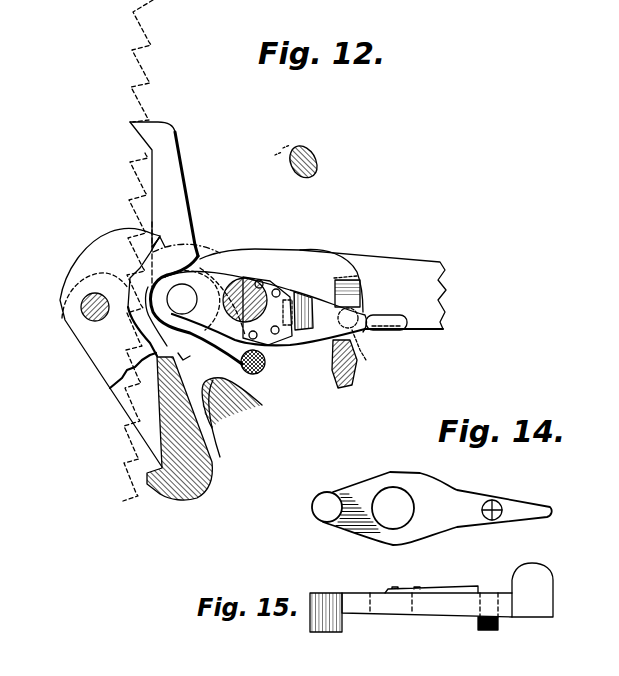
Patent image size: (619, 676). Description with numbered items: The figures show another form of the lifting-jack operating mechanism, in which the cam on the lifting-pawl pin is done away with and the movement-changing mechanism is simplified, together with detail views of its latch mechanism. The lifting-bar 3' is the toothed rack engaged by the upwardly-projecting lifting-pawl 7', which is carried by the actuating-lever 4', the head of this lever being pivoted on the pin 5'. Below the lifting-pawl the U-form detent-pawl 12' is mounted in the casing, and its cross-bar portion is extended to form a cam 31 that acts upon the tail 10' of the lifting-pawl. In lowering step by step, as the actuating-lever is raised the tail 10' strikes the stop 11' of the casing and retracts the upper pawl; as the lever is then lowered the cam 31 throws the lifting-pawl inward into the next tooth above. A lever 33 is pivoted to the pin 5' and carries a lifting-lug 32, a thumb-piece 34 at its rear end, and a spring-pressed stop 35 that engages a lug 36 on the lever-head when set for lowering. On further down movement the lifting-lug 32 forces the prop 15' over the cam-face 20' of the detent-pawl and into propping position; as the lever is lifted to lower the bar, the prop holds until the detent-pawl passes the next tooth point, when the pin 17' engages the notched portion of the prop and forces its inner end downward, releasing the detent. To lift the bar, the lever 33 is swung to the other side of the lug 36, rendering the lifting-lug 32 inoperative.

In FIG. 12, the lifting-bar 3' is at (151, 250).
In FIG. 12, the lifting-pawl 7' is at (247, 243).
In FIG. 12, the cam-face 20' is at (113, 347).
In FIG. 12, the detent-pawl 12' is at (154, 424).
In FIG. 12, the prop 15' is at (204, 291).
In FIG. 12, the lifting-lug 32 is at (186, 290).
In FIG. 14, the lifting-lug 32 is at (323, 497).
In FIG. 15, the lifting-lug 32 is at (325, 625).
In FIG. 12, the lever 33 is at (265, 312).
In FIG. 14, the lever 33 is at (437, 508).
In FIG. 15, the lever 33 is at (446, 604).
In FIG. 12, the pin 5' is at (257, 286).
In FIG. 12, the pin 17' is at (308, 294).
In FIG. 12, the actuating-lever 4' is at (323, 282).
In FIG. 12, the lug 36 is at (360, 296).
In FIG. 12, the thumb-piece 34 is at (383, 330).
In FIG. 15, the thumb-piece 34 is at (546, 576).
In FIG. 12, the spring-pressed stop 35 is at (351, 328).
In FIG. 14, the spring-pressed stop 35 is at (492, 520).
In FIG. 12, the tail 10' is at (195, 358).
In FIG. 12, the stop 11' is at (238, 403).
In FIG. 12, the cam 31 is at (193, 430).